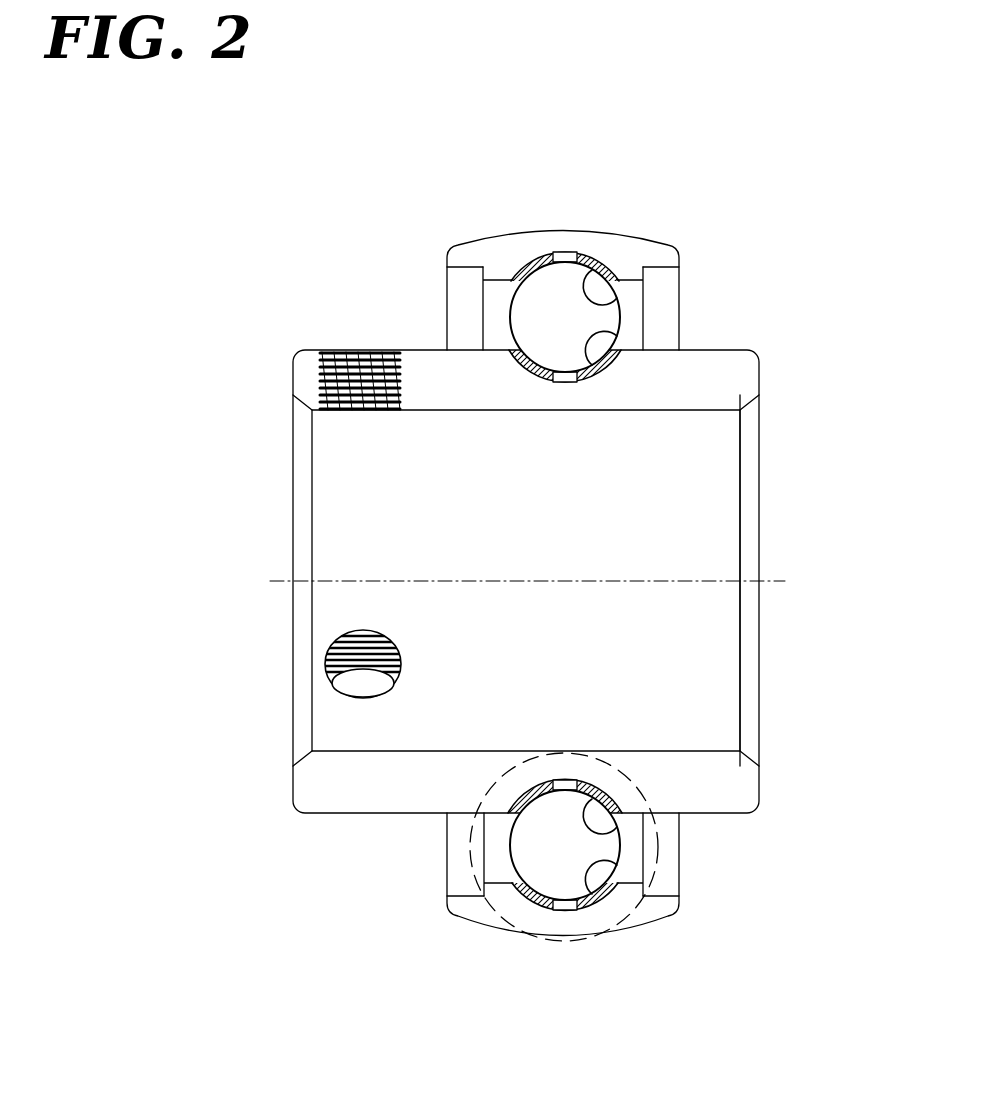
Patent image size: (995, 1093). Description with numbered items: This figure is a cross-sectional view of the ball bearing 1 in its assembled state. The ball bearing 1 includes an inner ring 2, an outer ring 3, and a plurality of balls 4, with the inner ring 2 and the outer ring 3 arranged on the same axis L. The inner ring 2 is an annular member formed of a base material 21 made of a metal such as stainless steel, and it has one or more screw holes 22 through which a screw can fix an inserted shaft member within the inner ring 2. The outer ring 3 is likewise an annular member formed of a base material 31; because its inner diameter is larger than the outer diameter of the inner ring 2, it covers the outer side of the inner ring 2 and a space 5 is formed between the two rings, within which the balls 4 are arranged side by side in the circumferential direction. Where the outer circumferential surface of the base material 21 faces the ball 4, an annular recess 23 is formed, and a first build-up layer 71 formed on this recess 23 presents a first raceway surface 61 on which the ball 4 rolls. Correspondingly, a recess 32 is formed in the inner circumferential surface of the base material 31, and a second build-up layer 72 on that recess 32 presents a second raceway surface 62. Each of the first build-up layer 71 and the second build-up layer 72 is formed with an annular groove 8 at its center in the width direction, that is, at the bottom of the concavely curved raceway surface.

The ball bearing 1 is at (765, 242).
The inner ring 2 is at (753, 808).
The base material 21 is at (742, 782).
The screw hole 22 is at (345, 350).
The recess 23 is at (525, 367).
The outer ring 3 is at (665, 928).
The base material 31 is at (680, 913).
The recess 32 is at (518, 277).
The ball 4 is at (525, 315).
The space 5 is at (640, 314).
The first raceway surface 61 is at (603, 350).
The second raceway surface 62 is at (605, 290).
The first build-up layer 71 is at (608, 370).
The second build-up layer 72 is at (599, 258).
The groove 8 is at (566, 250).
The axis L is at (782, 580).